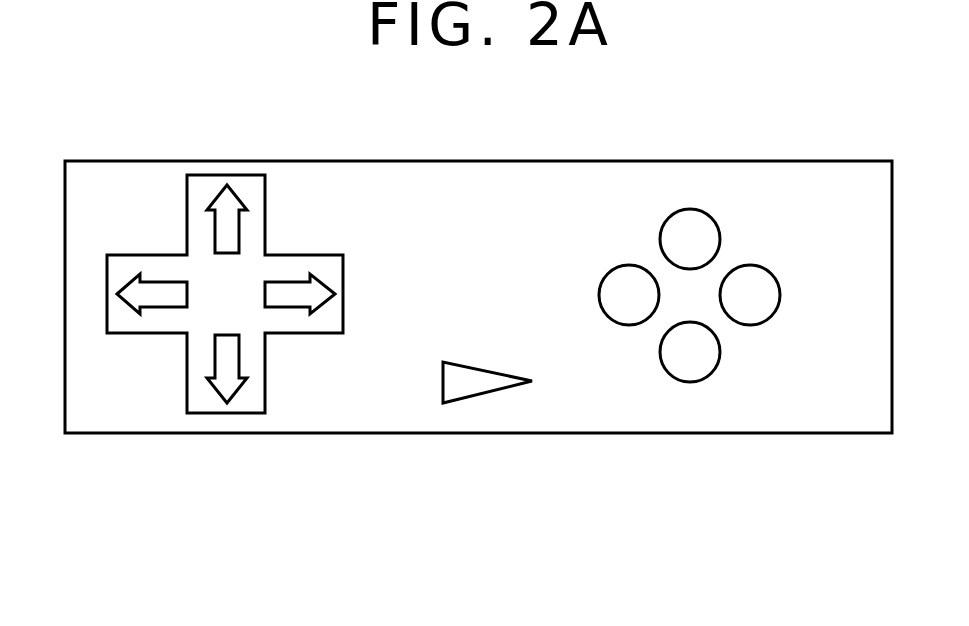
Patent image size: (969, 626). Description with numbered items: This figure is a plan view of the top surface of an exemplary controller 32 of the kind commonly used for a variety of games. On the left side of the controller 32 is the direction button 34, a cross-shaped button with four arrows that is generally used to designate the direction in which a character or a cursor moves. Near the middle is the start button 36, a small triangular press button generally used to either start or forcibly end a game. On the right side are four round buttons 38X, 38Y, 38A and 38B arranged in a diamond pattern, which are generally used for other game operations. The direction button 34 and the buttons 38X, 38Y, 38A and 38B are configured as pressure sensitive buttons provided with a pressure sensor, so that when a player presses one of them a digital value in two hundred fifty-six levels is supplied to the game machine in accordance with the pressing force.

The controller 32 is at (205, 160).
The direction button 34 is at (266, 225).
The start button 36 is at (443, 375).
The button 38X is at (600, 283).
The button 38Y is at (720, 233).
The button 38B is at (780, 303).
The button 38A is at (720, 365).